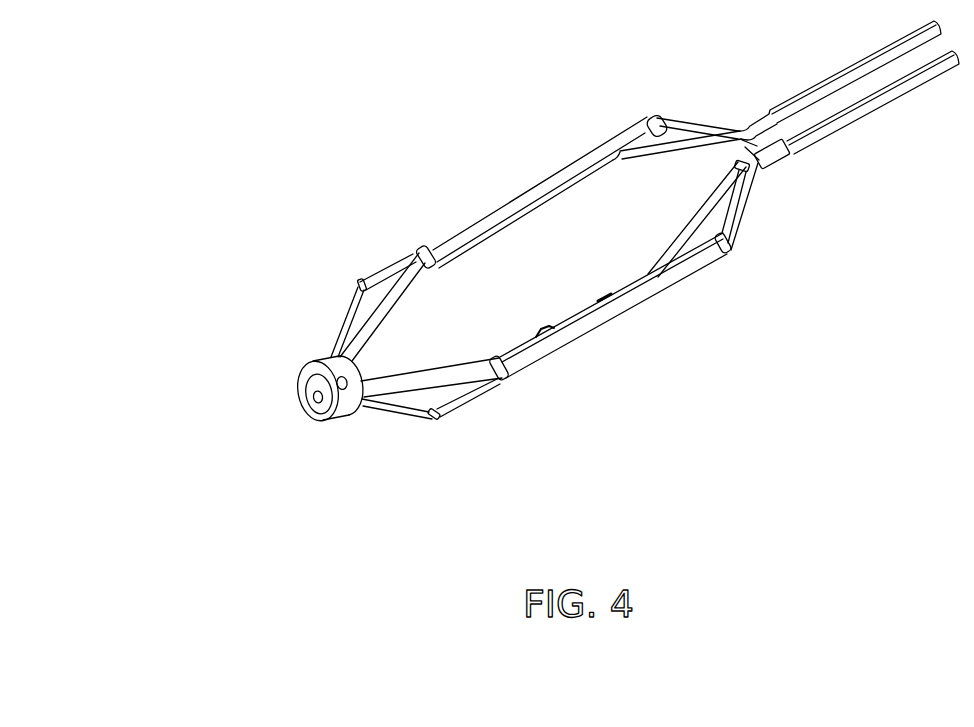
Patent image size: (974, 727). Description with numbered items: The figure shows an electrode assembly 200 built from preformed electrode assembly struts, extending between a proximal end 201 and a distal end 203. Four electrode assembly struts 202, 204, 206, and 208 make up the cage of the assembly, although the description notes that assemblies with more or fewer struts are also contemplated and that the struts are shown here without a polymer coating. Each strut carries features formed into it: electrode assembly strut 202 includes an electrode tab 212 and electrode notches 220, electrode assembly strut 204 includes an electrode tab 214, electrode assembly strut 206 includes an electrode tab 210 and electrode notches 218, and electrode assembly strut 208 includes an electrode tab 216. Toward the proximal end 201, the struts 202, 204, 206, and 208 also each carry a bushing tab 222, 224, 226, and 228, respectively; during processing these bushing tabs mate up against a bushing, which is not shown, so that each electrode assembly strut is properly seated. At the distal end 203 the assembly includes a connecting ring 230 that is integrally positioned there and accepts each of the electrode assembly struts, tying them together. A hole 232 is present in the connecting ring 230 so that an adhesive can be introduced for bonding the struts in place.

The electrode assembly 200 is at (553, 279).
The proximal end 201 is at (789, 129).
The electrode assembly strut 202 is at (472, 217).
The distal end 203 is at (293, 427).
The electrode assembly strut 204 is at (375, 273).
The electrode assembly strut 206 is at (702, 263).
The electrode assembly strut 208 is at (693, 220).
The electrode tab 210 is at (527, 340).
The electrode tab 212 is at (617, 132).
The electrode tab 214 is at (407, 253).
The electrode tab 216 is at (605, 297).
The electrode notches 218 is at (550, 327).
The electrode notches 220 is at (665, 118).
The bushing tab 222 is at (744, 126).
The bushing tab 224 is at (757, 172).
The bushing tab 226 is at (772, 163).
The bushing tab 228 is at (736, 166).
The connecting ring 230 is at (348, 425).
The hole 232 is at (318, 402).